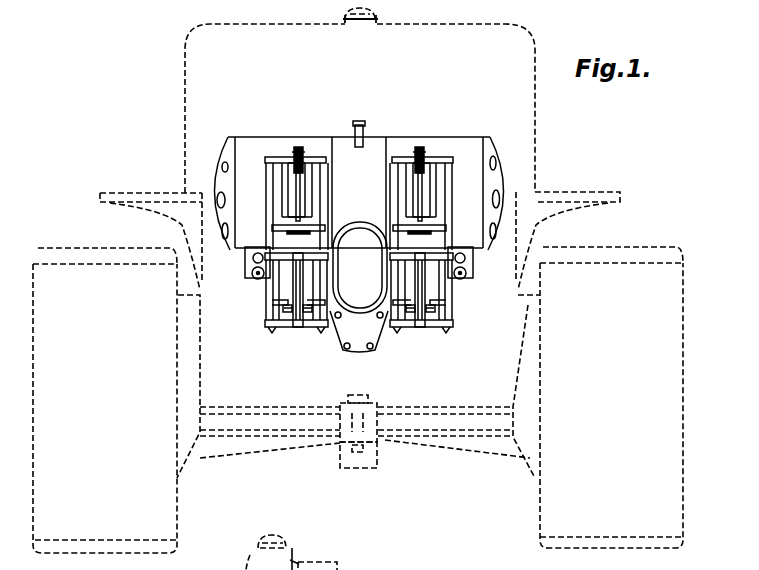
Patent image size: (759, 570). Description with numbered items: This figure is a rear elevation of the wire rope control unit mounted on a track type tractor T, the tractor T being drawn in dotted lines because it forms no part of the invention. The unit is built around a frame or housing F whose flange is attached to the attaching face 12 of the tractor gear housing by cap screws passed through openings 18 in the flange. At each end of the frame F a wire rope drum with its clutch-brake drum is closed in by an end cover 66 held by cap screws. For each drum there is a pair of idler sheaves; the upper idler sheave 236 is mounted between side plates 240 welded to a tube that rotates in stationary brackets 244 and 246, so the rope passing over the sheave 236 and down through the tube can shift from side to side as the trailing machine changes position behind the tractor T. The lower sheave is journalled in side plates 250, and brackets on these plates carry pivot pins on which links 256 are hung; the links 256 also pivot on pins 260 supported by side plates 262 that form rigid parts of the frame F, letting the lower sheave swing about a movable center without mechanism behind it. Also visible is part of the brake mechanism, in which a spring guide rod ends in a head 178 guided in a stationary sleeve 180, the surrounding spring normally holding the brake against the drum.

The tractor T is at (524, 50).
The end covers 66 is at (486, 148).
The stationary bracket 244 is at (442, 157).
The side plates 240 is at (421, 148).
The side plates 262 is at (444, 177).
The idler sheave 236 is at (422, 178).
The stationary bracket 246 is at (396, 230).
The frame or housing F is at (469, 263).
The stationary sleeve 180 is at (464, 273).
The head 178 is at (467, 280).
The links 256 is at (436, 277).
The pins 260 is at (448, 327).
The side plates 250 is at (418, 329).
The attaching face 12 is at (380, 340).
The openings 18 is at (353, 351).